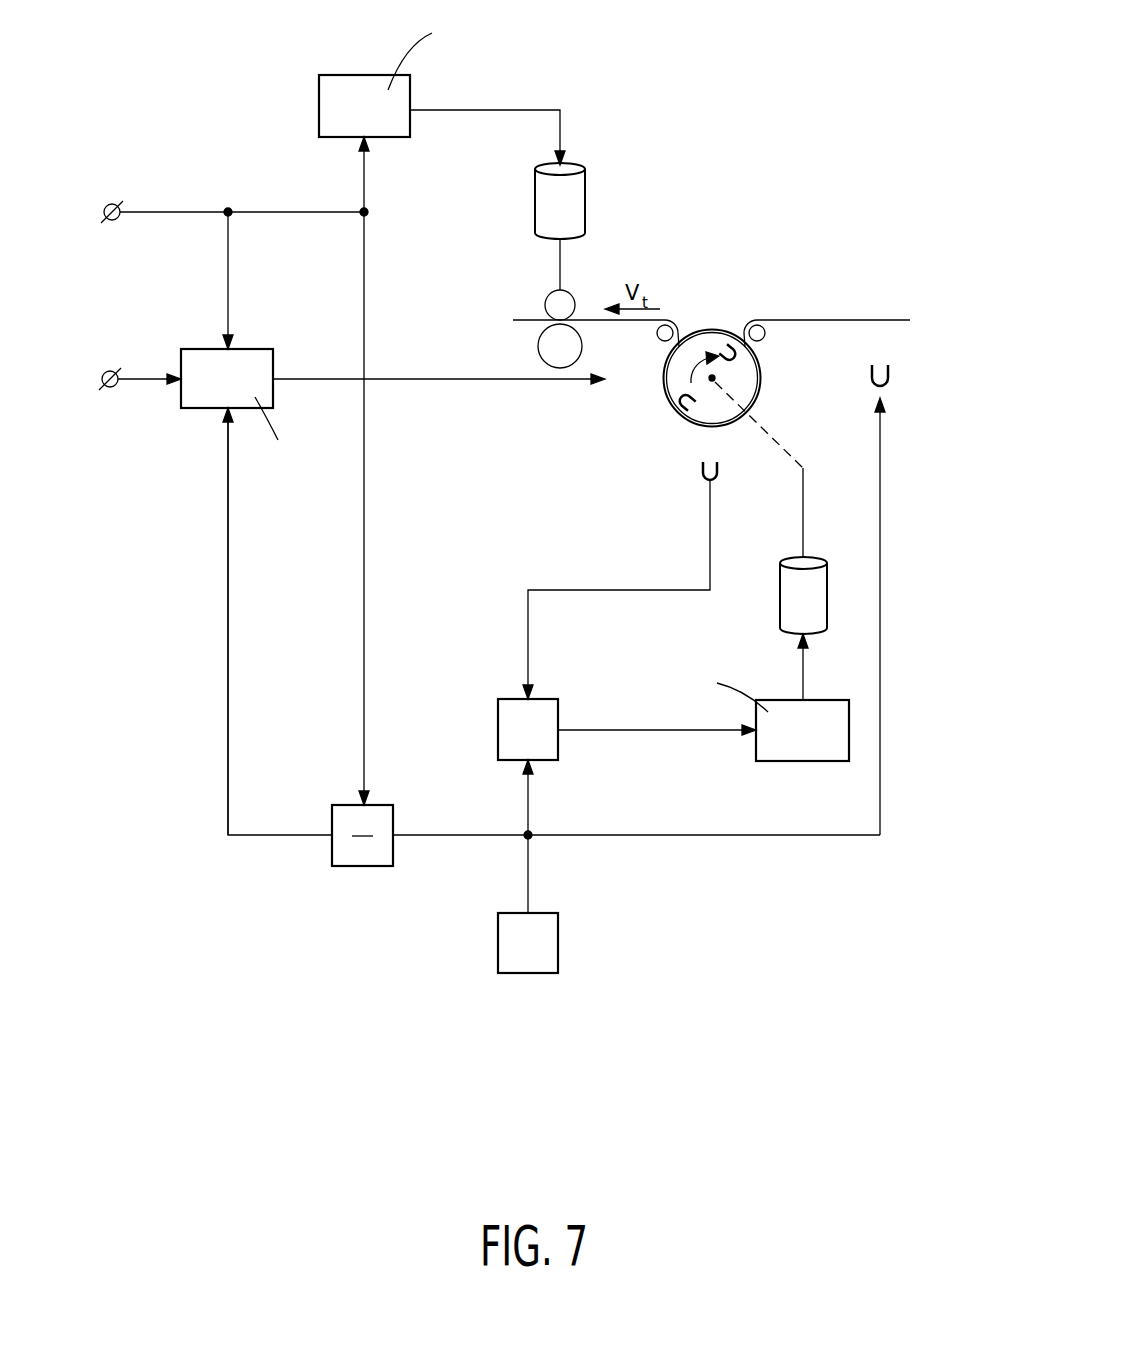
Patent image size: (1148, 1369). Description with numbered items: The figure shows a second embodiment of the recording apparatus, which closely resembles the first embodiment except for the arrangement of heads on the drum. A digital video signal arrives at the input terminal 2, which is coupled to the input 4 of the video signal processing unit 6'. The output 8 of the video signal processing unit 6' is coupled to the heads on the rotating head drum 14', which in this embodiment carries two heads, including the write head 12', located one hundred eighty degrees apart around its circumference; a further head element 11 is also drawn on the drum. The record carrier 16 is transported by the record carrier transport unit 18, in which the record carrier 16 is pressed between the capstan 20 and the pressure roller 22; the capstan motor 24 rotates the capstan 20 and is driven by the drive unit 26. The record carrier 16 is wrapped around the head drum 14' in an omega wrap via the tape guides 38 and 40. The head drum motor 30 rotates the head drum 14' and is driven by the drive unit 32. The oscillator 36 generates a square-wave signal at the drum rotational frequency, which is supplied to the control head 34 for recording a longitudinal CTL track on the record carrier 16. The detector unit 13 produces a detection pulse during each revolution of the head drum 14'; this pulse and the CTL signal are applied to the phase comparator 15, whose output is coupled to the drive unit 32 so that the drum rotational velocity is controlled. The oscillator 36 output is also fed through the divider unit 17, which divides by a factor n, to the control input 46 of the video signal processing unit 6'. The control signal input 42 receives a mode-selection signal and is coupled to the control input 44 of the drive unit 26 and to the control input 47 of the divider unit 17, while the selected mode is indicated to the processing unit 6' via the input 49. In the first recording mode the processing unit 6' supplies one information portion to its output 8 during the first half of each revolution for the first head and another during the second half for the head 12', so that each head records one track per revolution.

The input terminal 2 is at (106, 368).
The input of video signal processing unit 4 is at (178, 384).
The video signal processing unit 6' is at (227, 321).
The output of video signal processing unit 8 is at (276, 375).
The magnetic head 11 is at (680, 410).
The write head 12' is at (751, 325).
The detector unit 13 is at (697, 471).
The head drum 14' is at (712, 341).
The phase comparator 15 is at (498, 730).
The magnetic record carrier 16 is at (823, 320).
The 1/n divider unit 17 is at (358, 868).
The record carrier transport unit 18 is at (414, 310).
The capstan 20 is at (546, 302).
The pressure roller 22 is at (540, 343).
The capstan motor 24 is at (582, 206).
The drive unit 26 is at (357, 75).
The head drum motor 30 is at (778, 586).
The drive unit 32 is at (790, 764).
The control (CTL) head 34 is at (905, 352).
The oscillator 36 is at (498, 948).
The tape guide 38 is at (653, 340).
The tape guide 40 is at (767, 338).
The control signal input 42 is at (110, 200).
The control input of drive unit 44 is at (357, 143).
The control input of video signal processing unit 46 is at (222, 412).
The control input of divider unit 47 is at (358, 800).
The input of video signal processing unit 49 is at (237, 349).